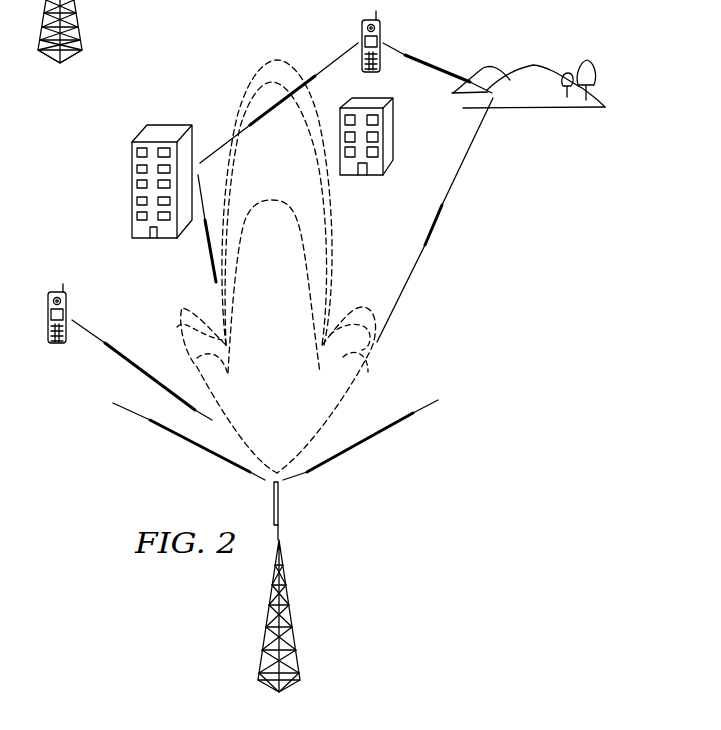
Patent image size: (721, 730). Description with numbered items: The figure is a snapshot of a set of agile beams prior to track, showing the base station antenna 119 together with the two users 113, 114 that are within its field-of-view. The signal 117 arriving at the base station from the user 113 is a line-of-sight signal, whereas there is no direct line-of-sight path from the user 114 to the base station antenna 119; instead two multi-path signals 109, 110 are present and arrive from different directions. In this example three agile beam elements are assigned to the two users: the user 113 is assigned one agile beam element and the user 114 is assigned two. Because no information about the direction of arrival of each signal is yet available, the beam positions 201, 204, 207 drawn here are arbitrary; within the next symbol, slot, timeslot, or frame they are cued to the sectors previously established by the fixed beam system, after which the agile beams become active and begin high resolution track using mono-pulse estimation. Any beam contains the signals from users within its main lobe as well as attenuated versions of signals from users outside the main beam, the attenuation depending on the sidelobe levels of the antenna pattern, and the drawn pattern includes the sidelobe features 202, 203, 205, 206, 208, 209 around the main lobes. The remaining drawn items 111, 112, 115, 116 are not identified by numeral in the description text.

The multi-path signal 109 is at (433, 232).
The multi-path signal 110 is at (222, 147).
The building 111 is at (390, 135).
The building 112 is at (131, 190).
The user 113 is at (57, 292).
The user 114 is at (379, 28).
The mountain terrain 115 is at (538, 65).
The communication link 116 is at (345, 452).
The signal 117 is at (104, 348).
The base station antenna 119 is at (262, 618).
The beam position 201 is at (288, 66).
The left side lobe 202 is at (183, 309).
The right side lobe 203 is at (362, 305).
The beam position 204 is at (293, 157).
The left minor side lobe 205 is at (180, 327).
The right minor side lobe 206 is at (371, 346).
The beam position 207 is at (290, 266).
The left lower minor lobe 208 is at (203, 357).
The right lower minor lobe 209 is at (365, 362).